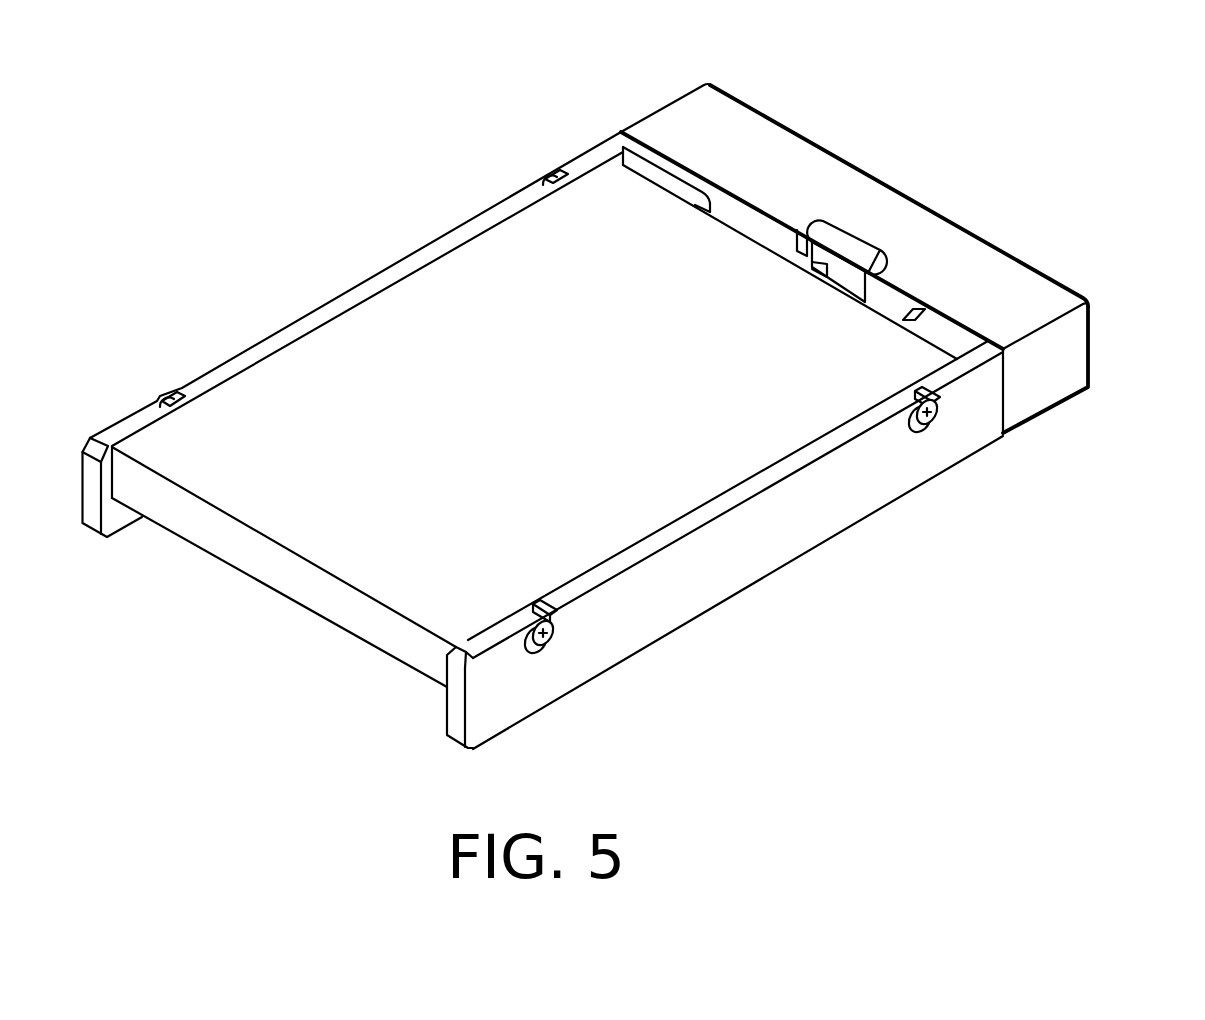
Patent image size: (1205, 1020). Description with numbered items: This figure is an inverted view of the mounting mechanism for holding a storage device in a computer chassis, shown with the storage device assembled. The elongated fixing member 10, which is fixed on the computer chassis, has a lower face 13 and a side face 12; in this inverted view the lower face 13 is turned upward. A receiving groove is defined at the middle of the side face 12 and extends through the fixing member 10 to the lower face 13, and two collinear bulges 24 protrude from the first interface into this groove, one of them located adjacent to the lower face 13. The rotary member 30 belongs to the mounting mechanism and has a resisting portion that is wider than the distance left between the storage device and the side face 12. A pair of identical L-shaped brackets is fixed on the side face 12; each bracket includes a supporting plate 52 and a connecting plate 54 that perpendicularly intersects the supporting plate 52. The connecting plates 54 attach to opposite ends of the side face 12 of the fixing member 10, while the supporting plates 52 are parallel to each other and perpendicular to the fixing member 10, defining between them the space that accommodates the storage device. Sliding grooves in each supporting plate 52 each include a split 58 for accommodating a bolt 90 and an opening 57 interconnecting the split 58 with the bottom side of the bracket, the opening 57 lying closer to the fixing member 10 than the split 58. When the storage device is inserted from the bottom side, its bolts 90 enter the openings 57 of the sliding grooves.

The fixing member 10 is at (1047, 382).
The side face 12 is at (734, 203).
The lower face 13 is at (957, 263).
The bulges 24 is at (872, 266).
The rotary member 30 is at (838, 232).
The supporting plate 52 is at (957, 335).
The connecting plate 54 is at (777, 537).
The opening 57 is at (556, 605).
The split 58 is at (530, 655).
The bolts 90 is at (552, 630).